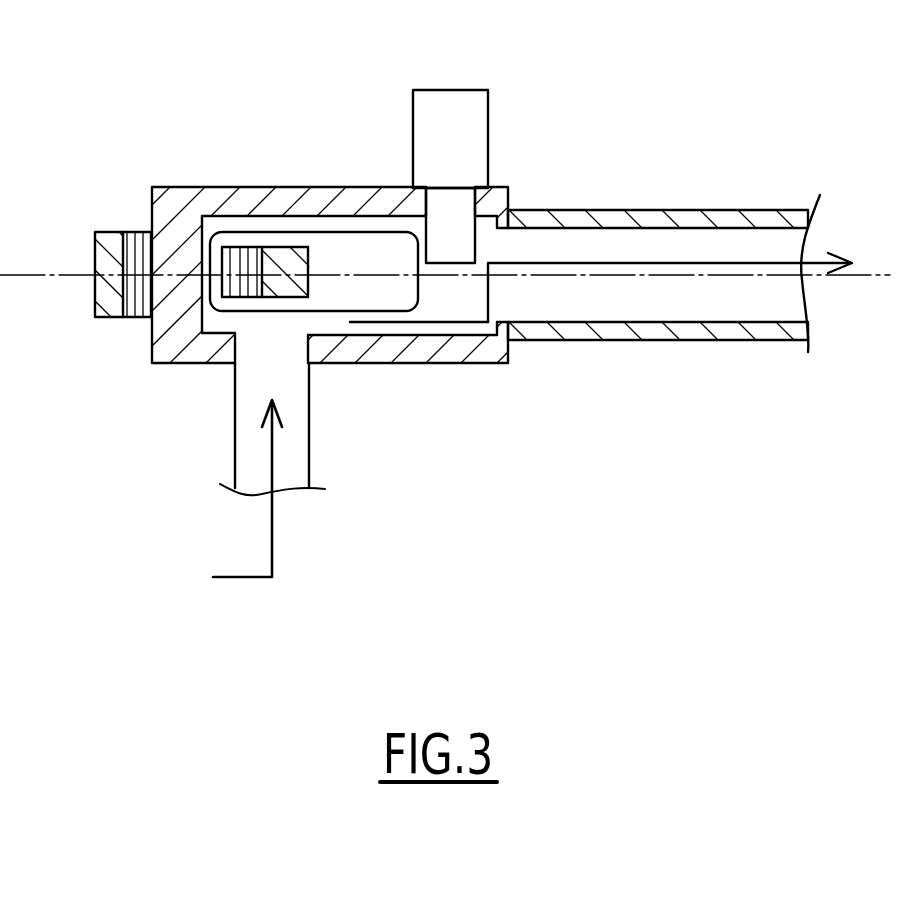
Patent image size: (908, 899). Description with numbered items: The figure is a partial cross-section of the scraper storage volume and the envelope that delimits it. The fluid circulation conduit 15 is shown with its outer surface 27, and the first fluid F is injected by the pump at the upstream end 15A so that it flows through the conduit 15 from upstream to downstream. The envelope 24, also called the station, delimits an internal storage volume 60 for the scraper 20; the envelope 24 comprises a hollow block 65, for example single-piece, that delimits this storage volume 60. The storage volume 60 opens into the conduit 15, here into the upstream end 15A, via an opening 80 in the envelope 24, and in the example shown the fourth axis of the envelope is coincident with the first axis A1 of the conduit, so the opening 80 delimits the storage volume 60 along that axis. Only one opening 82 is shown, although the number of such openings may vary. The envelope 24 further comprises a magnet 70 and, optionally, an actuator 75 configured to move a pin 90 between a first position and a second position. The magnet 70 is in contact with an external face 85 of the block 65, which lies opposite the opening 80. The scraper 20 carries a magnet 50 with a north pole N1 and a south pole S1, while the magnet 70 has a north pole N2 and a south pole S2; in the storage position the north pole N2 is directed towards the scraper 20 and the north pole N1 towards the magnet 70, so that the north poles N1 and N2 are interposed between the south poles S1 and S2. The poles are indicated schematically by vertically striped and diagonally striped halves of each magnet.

The fluid circulation conduit 15 is at (673, 150).
The upstream end 15A is at (530, 362).
The scraper 20 is at (355, 232).
The envelope 24 is at (183, 200).
The outer surface 27 is at (770, 185).
The magnet 50 is at (250, 250).
The north pole N1 is at (242, 255).
The south pole S1 is at (286, 255).
The storage volume 60 is at (212, 343).
The hollow block 65 is at (440, 352).
The magnet 70 is at (135, 232).
The north pole N2 is at (132, 318).
The south pole S2 is at (107, 318).
The actuator 75 is at (488, 125).
The opening 80 is at (545, 238).
The opening 82 is at (293, 384).
The external face 85 is at (135, 200).
The pin 90 is at (460, 197).
The first fluid F is at (847, 254).
The first axis A1 is at (853, 277).